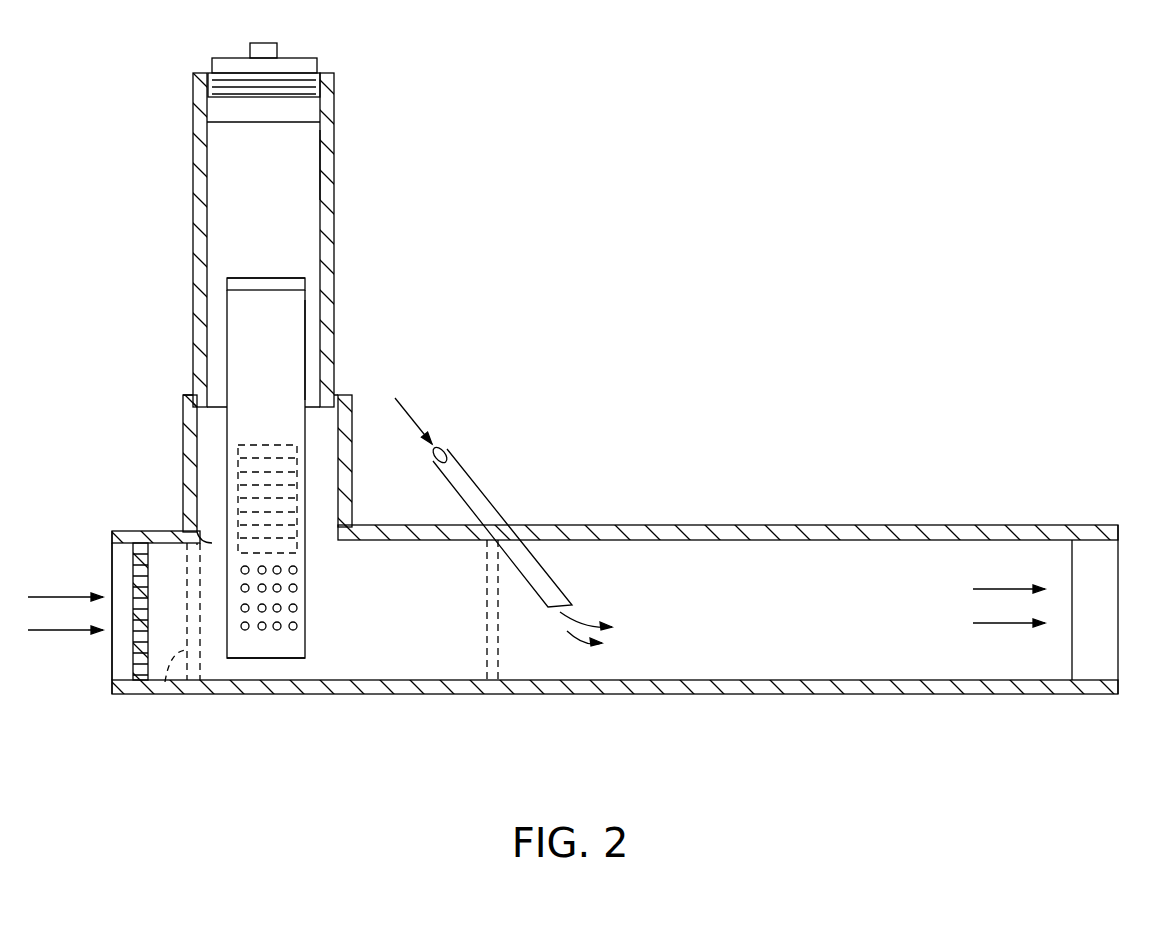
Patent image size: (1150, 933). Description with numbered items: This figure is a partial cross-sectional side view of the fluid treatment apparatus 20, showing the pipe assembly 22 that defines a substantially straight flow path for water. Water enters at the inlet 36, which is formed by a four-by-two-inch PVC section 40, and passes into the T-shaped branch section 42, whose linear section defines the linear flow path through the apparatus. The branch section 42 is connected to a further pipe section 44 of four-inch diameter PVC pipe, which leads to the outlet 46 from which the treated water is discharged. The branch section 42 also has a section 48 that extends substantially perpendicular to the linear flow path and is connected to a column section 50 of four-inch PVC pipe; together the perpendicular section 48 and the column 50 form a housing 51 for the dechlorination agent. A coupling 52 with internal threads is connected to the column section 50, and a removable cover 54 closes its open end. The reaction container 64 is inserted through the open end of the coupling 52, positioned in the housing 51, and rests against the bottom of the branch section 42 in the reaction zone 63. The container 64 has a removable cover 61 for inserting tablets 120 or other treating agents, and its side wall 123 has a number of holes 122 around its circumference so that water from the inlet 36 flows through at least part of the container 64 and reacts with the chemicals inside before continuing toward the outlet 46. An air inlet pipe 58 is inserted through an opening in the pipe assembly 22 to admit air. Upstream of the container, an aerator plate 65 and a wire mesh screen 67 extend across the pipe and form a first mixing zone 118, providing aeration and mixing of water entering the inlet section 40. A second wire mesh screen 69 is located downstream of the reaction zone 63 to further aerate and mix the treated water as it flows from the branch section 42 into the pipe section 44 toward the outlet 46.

The fluid treatment apparatus 20 is at (487, 252).
The pipe assembly 22 is at (720, 525).
The inlet 36 is at (112, 668).
The PVC section 40 is at (117, 549).
The T-shaped branch section 42 is at (352, 630).
The pipe section 44 is at (734, 630).
The outlet 46 is at (1108, 522).
The section 48 is at (346, 462).
The column section 50 is at (334, 226).
The housing 51 is at (341, 170).
The coupling 52 is at (333, 107).
The removable cover 54 is at (279, 48).
The air inlet pipe 58 is at (455, 466).
The removable cover 61 is at (297, 282).
The reaction zone 63 is at (322, 660).
The reaction container 64 is at (262, 300).
The aerator plate 65 is at (141, 549).
The wire mesh screen 67 is at (168, 690).
The wire mesh screen 69 is at (498, 640).
The first mixing zone 118 is at (162, 665).
The tablets 120 is at (285, 440).
The holes 122 is at (297, 571).
The side wall 123 is at (308, 322).